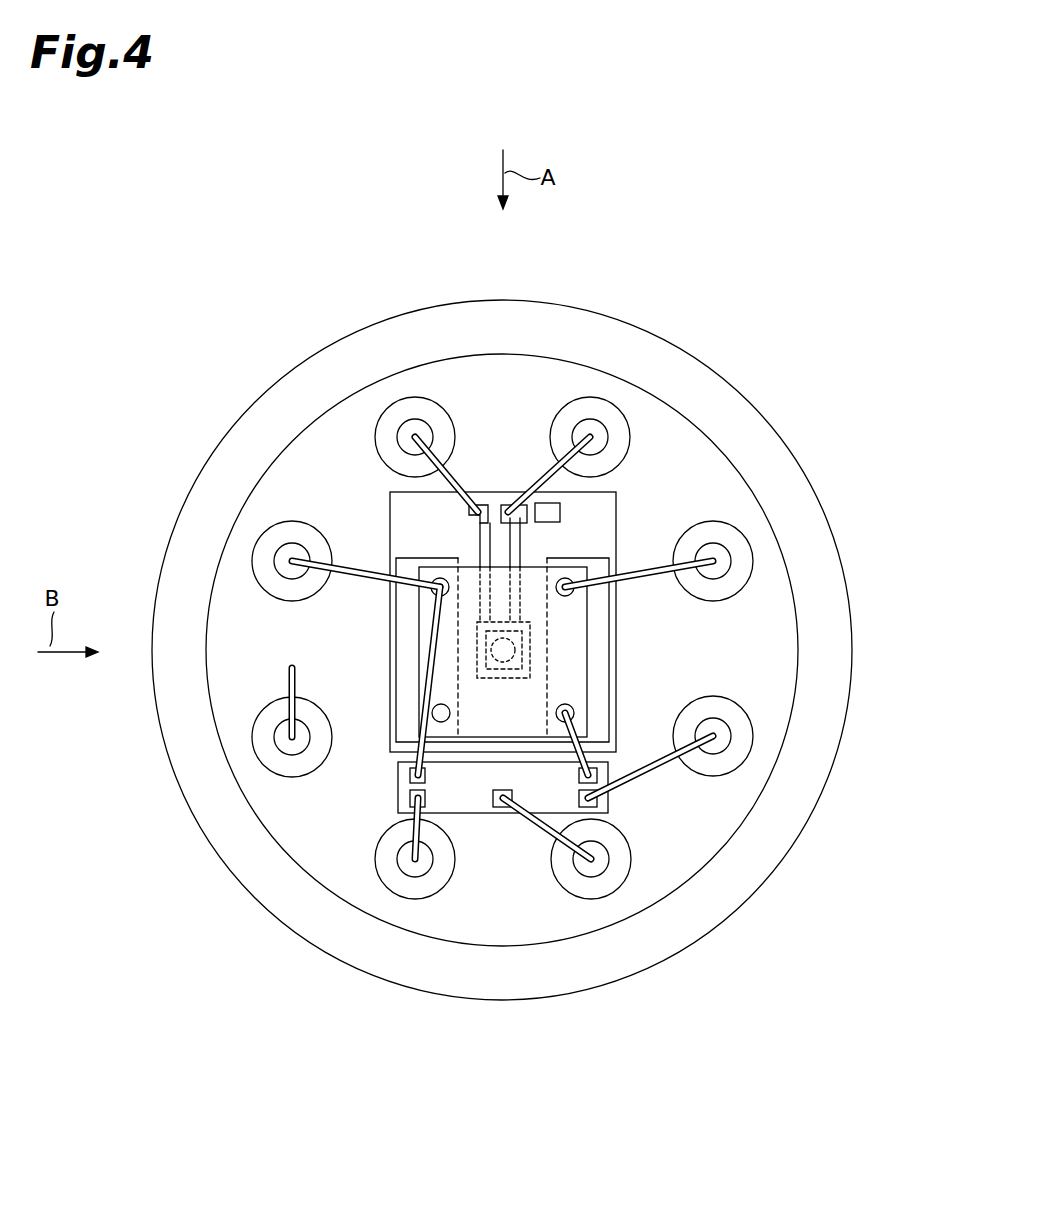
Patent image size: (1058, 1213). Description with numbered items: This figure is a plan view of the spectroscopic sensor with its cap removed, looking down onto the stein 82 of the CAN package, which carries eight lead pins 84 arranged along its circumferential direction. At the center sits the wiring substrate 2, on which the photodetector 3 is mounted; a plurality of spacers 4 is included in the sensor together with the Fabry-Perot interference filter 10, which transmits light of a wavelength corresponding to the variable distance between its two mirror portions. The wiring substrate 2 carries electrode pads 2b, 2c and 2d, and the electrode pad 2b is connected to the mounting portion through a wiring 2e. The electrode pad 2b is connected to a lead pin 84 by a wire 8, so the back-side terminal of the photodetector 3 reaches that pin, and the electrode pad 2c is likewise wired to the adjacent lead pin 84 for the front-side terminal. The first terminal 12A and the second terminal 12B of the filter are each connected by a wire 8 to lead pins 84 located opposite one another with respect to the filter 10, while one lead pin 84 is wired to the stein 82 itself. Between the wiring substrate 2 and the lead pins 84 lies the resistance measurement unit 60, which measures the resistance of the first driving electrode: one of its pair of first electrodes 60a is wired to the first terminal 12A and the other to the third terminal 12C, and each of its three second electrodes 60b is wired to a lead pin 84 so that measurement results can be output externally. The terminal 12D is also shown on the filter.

The wiring substrate 2 is at (616, 672).
The electrode pad 2b is at (488, 495).
The electrode pad 2c is at (507, 495).
The electrode pad 2d is at (560, 513).
The wiring 2e is at (470, 533).
The photodetector 3 is at (515, 650).
The spacer 4 is at (612, 630).
The wire 8 is at (414, 419).
The Fabry-Perot interference filter 10 is at (358, 562).
The first terminal 12A is at (437, 578).
The second terminal 12B is at (573, 596).
The third terminal 12C is at (566, 704).
The bonding pad 12D is at (441, 722).
The resistance measurement unit 60 is at (474, 800).
The first electrode 60a is at (600, 779).
The second electrode 60b is at (598, 805).
The stein 82 is at (670, 455).
The lead pin 84 is at (392, 404).